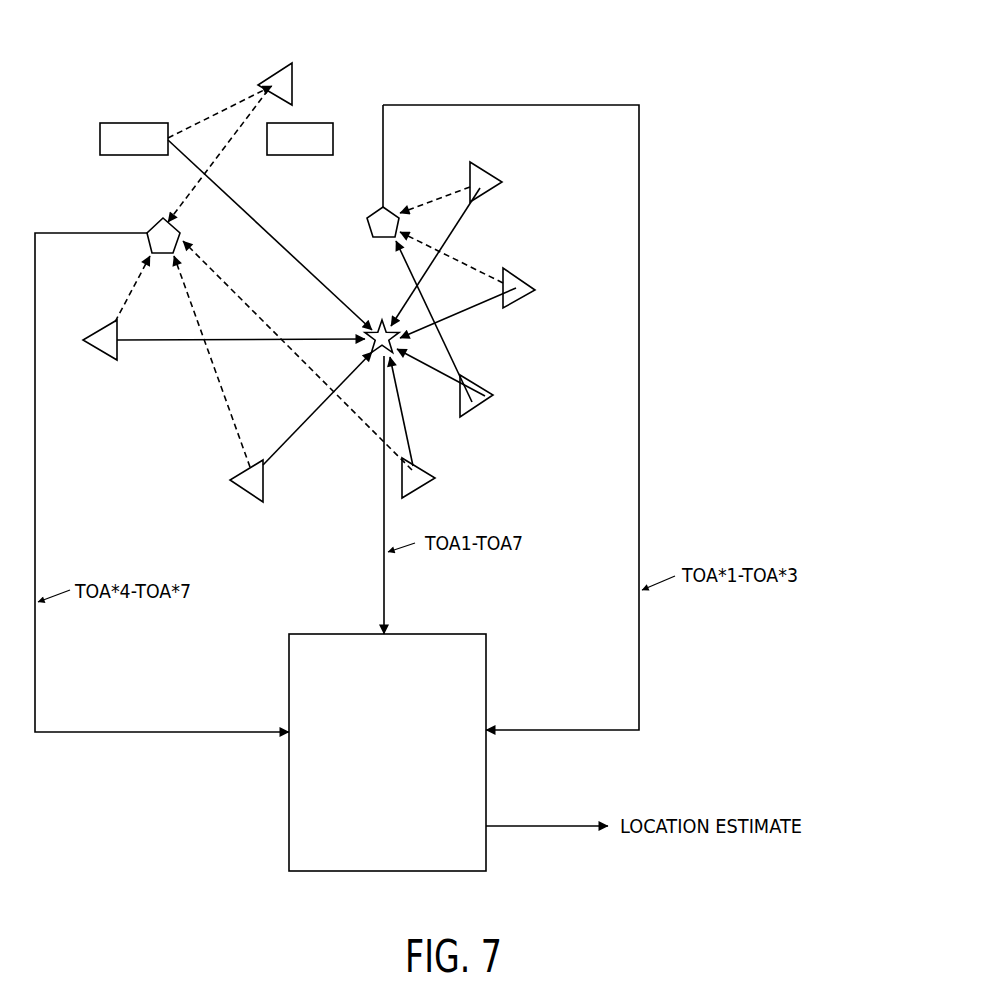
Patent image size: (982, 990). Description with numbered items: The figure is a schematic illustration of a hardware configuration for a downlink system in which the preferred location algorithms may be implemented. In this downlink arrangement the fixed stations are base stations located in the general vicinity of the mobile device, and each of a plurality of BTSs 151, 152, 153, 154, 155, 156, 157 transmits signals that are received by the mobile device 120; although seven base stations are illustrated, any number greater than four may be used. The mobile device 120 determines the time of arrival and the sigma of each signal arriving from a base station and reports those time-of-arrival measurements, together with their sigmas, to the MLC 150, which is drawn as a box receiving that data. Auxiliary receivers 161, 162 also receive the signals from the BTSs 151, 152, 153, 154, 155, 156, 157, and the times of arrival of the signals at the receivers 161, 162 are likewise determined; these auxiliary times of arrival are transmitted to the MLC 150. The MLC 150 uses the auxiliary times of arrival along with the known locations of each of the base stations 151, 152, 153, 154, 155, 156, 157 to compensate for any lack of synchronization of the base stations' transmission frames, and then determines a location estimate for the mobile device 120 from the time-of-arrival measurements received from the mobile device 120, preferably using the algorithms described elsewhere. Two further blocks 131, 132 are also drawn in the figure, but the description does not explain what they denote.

The mobile device 120 is at (362, 330).
The first network entity / base station controller 131 is at (318, 120).
The second network entity / base station controller 132 is at (146, 120).
The MLC 150 is at (287, 692).
The BTS 151 is at (495, 396).
The BTS 152 is at (537, 291).
The BTS 153 is at (503, 182).
The BTS 154 is at (293, 62).
The BTS 155 is at (118, 362).
The BTS 156 is at (265, 500).
The BTS 157 is at (437, 478).
The auxiliary receiver 161 is at (160, 218).
The auxiliary receiver 162 is at (366, 213).